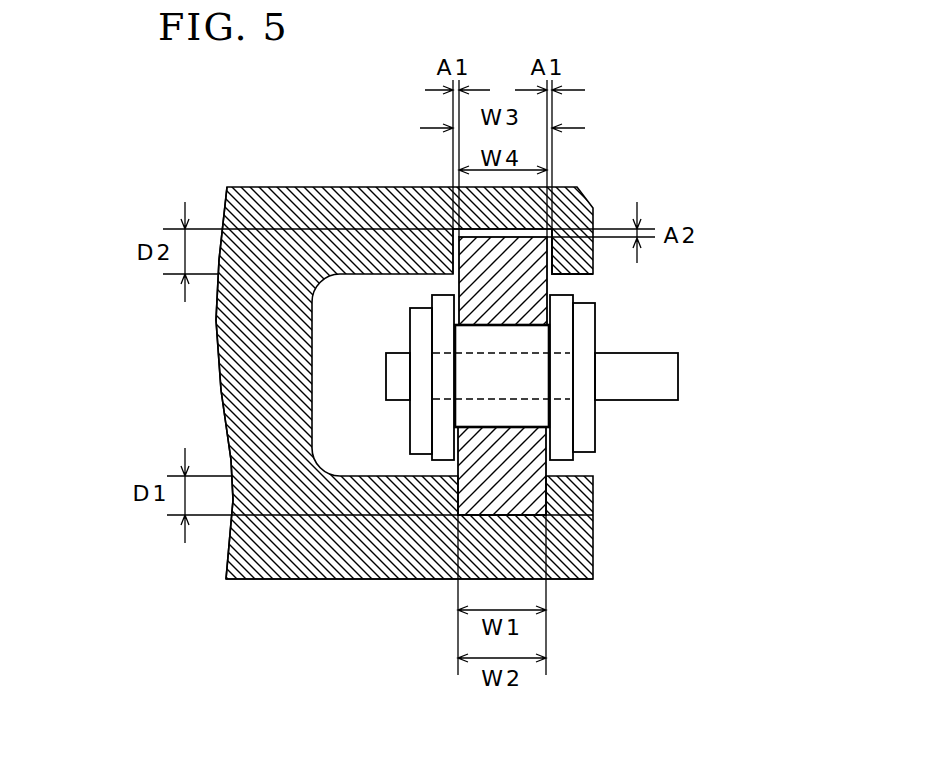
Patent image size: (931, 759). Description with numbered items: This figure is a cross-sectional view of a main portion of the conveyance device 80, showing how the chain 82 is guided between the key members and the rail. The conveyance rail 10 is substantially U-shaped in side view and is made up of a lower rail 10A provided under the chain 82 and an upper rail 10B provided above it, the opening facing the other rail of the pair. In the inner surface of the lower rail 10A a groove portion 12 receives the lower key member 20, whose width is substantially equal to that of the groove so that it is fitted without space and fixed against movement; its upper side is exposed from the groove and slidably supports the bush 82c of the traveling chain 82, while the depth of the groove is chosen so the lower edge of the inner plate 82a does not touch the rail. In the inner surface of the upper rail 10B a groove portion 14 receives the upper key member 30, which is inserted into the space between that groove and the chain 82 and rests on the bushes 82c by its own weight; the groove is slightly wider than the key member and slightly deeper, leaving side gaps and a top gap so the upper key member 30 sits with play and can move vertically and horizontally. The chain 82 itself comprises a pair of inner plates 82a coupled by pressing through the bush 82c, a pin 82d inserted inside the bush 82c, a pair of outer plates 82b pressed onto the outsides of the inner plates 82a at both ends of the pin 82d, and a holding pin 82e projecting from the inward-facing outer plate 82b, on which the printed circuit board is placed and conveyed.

The conveyance device 80 is at (119, 102).
The conveyance rail 10 is at (265, 187).
The lower rail 10A is at (412, 579).
The upper rail 10B is at (385, 187).
The groove portion 12 is at (517, 512).
The groove portion 14 is at (528, 231).
The lower key member 20 is at (537, 468).
The upper key member 30 is at (537, 269).
The chain 82 is at (402, 345).
The inner plate 82a is at (573, 297).
The outer plate 82b is at (590, 333).
The bush 82c is at (548, 413).
The pin 82d is at (477, 403).
The holding pin 82e is at (670, 378).